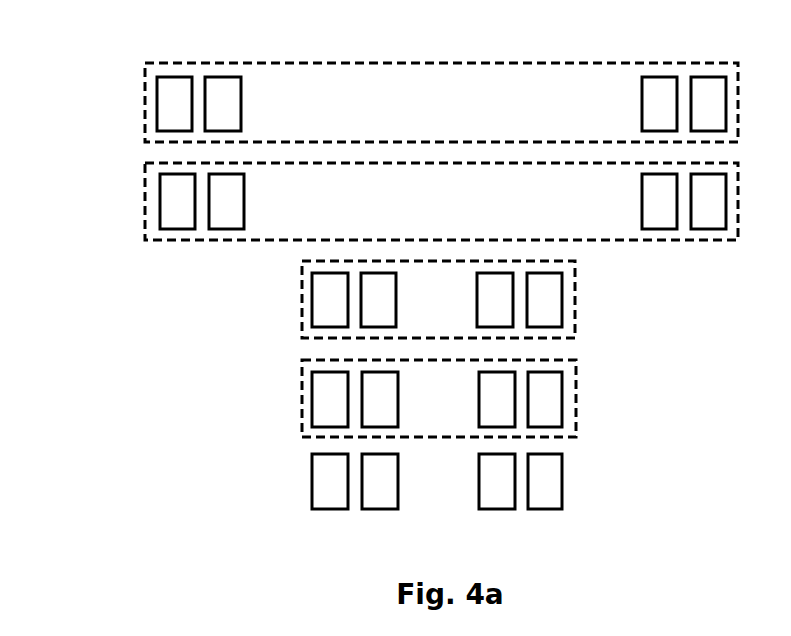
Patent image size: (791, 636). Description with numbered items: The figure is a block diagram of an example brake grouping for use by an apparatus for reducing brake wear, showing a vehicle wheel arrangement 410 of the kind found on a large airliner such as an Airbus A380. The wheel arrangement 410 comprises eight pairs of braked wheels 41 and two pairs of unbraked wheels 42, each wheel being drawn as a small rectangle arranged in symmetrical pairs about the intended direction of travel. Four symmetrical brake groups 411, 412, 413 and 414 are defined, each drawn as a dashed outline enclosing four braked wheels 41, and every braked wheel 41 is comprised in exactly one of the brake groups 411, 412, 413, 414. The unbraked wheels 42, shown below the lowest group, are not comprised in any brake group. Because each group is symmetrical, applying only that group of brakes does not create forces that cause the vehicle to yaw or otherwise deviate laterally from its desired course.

The vehicle wheel arrangement 410 is at (379, 272).
The first symmetrical brake group 411 is at (432, 116).
The second symmetrical brake group 412 is at (427, 213).
The third symmetrical brake group 413 is at (423, 308).
The fourth symmetrical brake group 414 is at (421, 410).
The braked wheel 41 is at (436, 229).
The unbraked wheel 42 is at (441, 490).